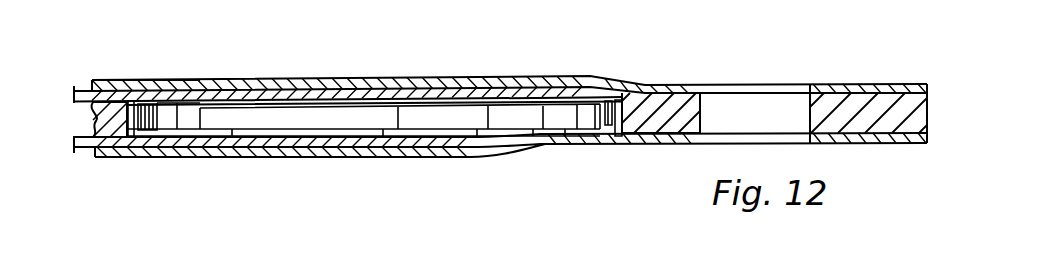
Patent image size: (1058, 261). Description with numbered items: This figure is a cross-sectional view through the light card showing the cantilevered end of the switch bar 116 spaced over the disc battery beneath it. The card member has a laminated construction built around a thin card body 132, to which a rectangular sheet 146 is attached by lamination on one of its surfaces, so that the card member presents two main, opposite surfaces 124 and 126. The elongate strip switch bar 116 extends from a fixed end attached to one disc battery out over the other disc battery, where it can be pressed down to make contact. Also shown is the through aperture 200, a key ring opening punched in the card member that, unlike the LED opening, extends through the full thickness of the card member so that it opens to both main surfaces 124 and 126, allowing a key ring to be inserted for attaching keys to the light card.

The main surface 124 is at (417, 78).
The switch bar 116 is at (262, 93).
The rectangular sheet 146 is at (153, 82).
The main surface 126 is at (427, 156).
The card body 132 is at (116, 140).
The through aperture 200 is at (707, 120).